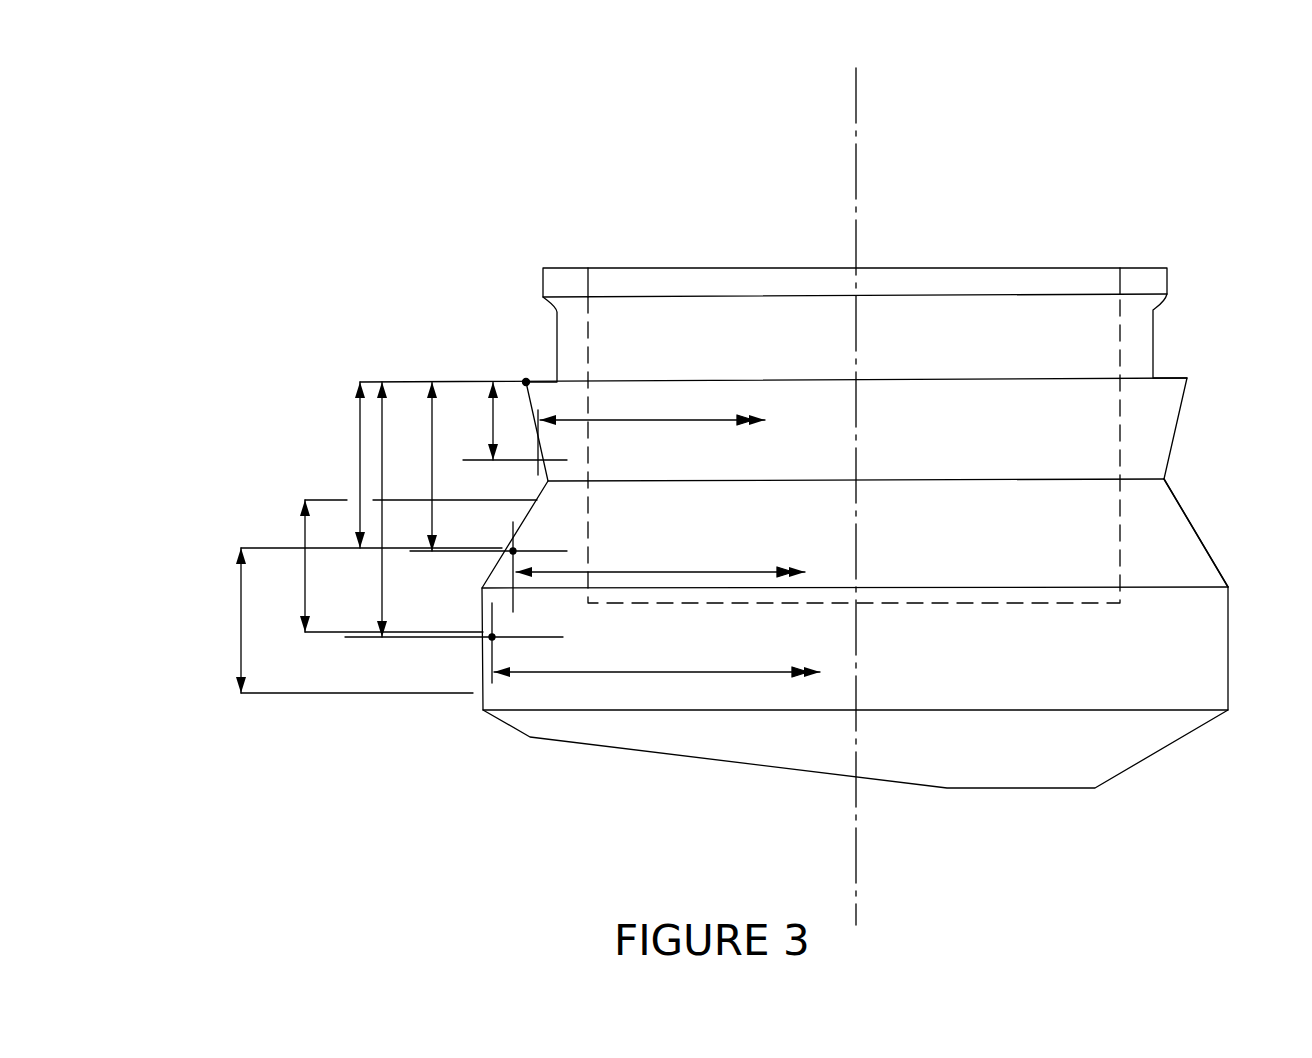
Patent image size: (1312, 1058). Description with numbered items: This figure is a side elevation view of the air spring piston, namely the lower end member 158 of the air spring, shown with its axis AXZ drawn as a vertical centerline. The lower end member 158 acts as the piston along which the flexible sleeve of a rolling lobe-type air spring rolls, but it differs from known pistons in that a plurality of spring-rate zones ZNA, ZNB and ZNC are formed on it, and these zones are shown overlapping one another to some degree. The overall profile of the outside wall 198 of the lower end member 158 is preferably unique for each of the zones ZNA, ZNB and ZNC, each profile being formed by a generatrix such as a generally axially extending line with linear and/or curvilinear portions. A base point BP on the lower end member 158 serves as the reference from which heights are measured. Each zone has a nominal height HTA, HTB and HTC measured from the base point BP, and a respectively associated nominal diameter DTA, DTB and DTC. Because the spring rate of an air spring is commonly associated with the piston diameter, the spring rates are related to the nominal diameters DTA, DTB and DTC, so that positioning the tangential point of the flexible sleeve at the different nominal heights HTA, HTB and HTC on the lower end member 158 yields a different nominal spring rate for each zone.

The lower end member 158 is at (541, 208).
The outside wall 198 is at (1198, 535).
The axis AXZ is at (856, 190).
The base point BP is at (522, 370).
The spring-rate zone ZNA is at (360, 447).
The spring-rate zone ZNB is at (303, 533).
The spring-rate zone ZNC is at (240, 623).
The nominal height HTA is at (515, 421).
The nominal height HTB is at (487, 497).
The nominal height HTC is at (454, 532).
The nominal diameter DTA is at (651, 442).
The nominal diameter DTB is at (660, 573).
The nominal diameter DTC is at (657, 673).